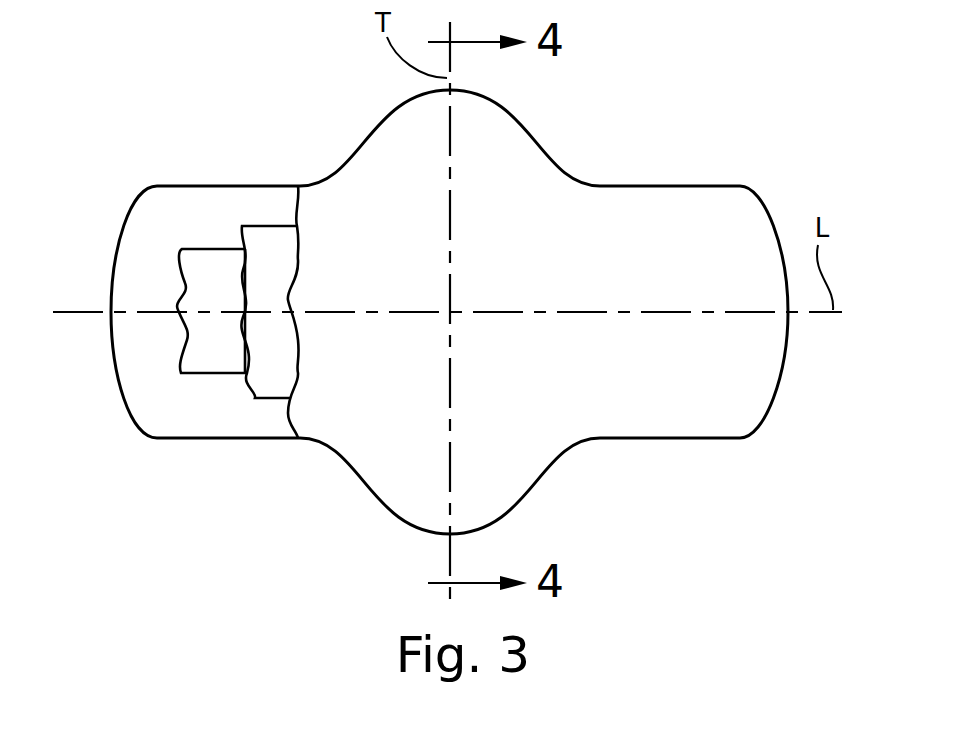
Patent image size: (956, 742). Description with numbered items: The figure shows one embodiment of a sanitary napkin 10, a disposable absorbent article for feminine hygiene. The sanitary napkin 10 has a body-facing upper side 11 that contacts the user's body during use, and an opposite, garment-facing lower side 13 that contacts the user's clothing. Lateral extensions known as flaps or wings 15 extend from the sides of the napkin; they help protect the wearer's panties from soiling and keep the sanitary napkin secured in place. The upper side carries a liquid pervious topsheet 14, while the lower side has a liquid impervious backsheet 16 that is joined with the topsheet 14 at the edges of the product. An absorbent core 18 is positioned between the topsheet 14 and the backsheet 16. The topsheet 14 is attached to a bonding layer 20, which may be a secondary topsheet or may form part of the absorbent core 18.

The sanitary napkin 10 is at (183, 154).
The body-facing upper side 11 is at (695, 232).
The garment-facing lower side 13 is at (298, 440).
The topsheet 14 is at (590, 225).
The wings 15 is at (505, 160).
The backsheet 16 is at (132, 292).
The absorbent core 18 is at (220, 355).
The bonding layer 20 is at (285, 240).